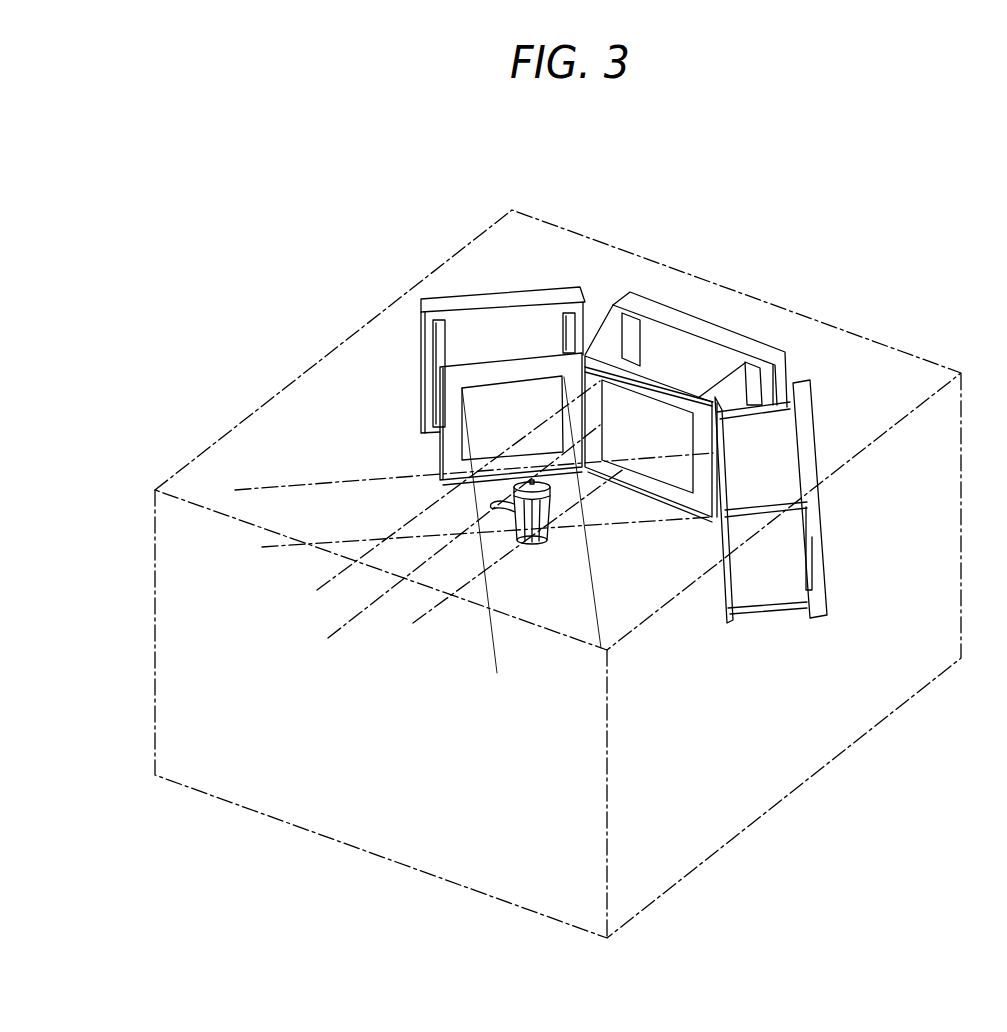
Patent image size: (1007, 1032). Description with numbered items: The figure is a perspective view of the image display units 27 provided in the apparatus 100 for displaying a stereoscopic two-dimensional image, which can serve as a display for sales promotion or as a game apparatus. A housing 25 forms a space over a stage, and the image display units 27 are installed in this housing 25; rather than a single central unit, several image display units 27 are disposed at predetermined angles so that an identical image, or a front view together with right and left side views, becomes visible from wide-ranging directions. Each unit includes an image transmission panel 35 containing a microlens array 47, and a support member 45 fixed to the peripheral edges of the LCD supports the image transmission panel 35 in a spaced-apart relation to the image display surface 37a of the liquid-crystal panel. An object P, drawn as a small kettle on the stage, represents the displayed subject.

The apparatus for displaying stereoscopic two-dimensional image 100 is at (709, 406).
The housing 25 is at (250, 412).
The image display unit 27 is at (466, 286).
The image transmission panel 35 is at (668, 370).
The image display surface 37a is at (723, 362).
The support member 45 is at (603, 350).
The microlens array 47 is at (676, 486).
The object P is at (531, 546).